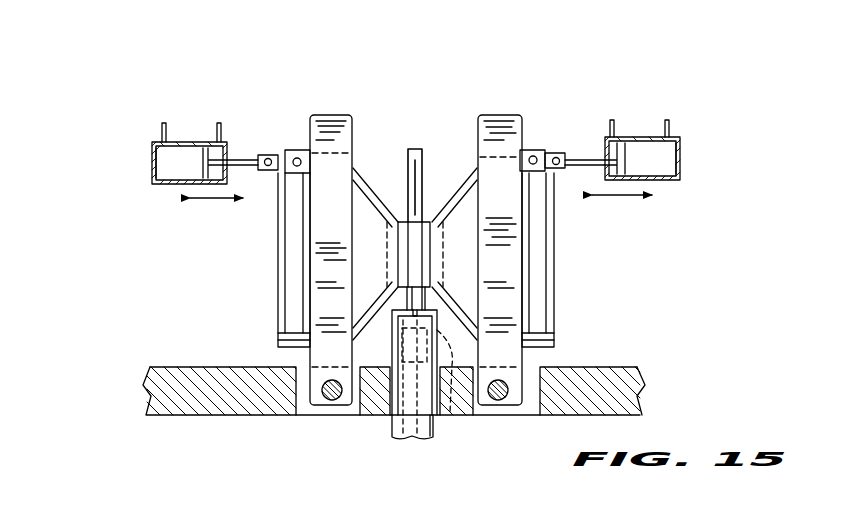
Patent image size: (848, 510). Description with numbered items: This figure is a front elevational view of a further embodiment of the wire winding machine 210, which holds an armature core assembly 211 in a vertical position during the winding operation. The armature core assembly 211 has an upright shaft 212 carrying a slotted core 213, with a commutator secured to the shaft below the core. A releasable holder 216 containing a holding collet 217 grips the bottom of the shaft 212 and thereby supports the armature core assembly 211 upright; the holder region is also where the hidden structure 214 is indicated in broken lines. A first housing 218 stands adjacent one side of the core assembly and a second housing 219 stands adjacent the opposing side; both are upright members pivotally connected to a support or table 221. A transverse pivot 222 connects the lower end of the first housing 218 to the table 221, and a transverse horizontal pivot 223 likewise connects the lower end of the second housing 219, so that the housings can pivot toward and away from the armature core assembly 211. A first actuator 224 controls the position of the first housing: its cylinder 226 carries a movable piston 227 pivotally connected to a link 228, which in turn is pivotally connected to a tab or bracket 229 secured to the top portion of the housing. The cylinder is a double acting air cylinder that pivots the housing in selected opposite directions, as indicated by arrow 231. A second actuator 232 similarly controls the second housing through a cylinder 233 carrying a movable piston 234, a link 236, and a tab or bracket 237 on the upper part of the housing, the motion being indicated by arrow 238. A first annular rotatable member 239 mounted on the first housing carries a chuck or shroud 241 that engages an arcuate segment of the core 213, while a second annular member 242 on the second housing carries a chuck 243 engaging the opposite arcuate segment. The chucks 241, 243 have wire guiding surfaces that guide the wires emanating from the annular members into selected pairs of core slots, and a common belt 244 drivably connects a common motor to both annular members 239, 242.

The wire winding machine 210 is at (465, 82).
The armature core assembly 211 is at (400, 170).
The upright shaft 212 is at (421, 182).
The slotted core 213 is at (440, 272).
The hidden bore 214 is at (450, 413).
The releasable holder 216 is at (387, 403).
The holding collet 217 is at (412, 437).
The first housing 218 is at (329, 117).
The second housing 219 is at (503, 113).
The table 221 is at (620, 385).
The transverse pivot 222 is at (322, 400).
The transverse horizontal pivot 223 is at (500, 402).
The first actuator 224 is at (146, 192).
The cylinder 226 is at (150, 158).
The movable piston 227 is at (182, 147).
The link 228 is at (268, 155).
The tab or bracket 229 is at (290, 176).
The arrow 231 is at (212, 203).
The second actuator 232 is at (684, 128).
The cylinder 233 is at (680, 165).
The movable piston 234 is at (625, 155).
The link 236 is at (548, 150).
The tab or bracket 237 is at (530, 172).
The arrow 238 is at (617, 199).
The first annular rotatable member 239 is at (275, 283).
The chuck or shroud 241 is at (363, 222).
The second annular member 242 is at (570, 307).
The chuck 243 is at (457, 237).
The common belt 244 is at (293, 318).